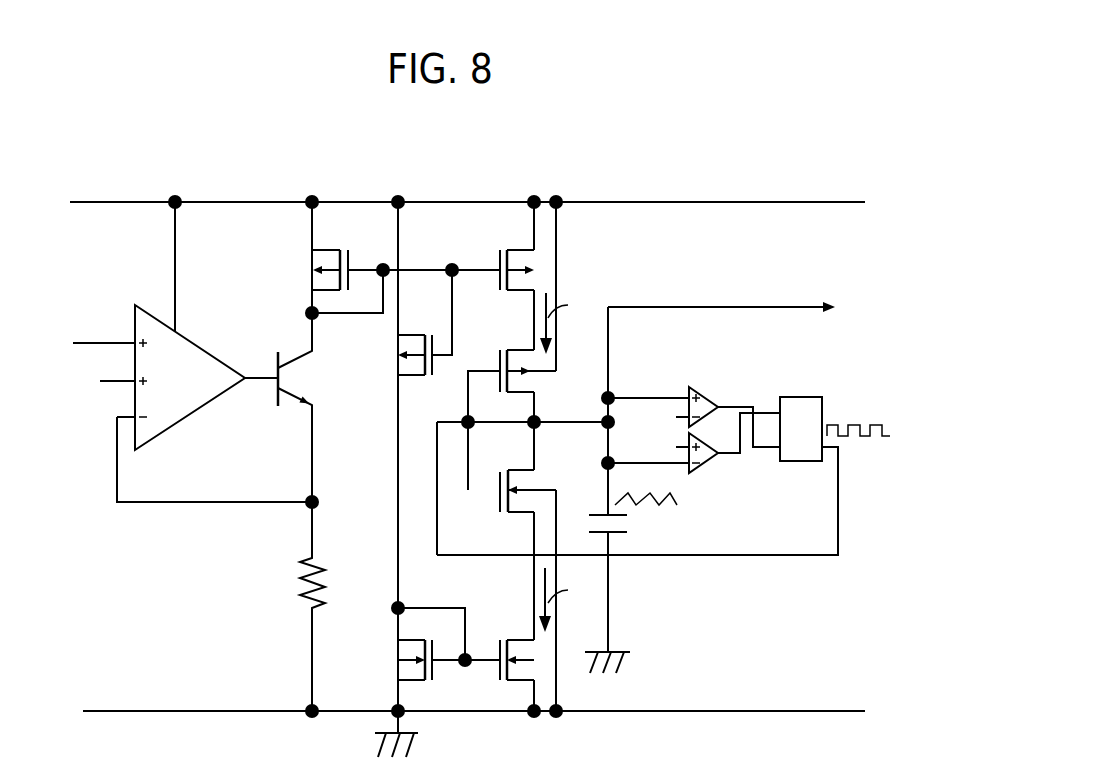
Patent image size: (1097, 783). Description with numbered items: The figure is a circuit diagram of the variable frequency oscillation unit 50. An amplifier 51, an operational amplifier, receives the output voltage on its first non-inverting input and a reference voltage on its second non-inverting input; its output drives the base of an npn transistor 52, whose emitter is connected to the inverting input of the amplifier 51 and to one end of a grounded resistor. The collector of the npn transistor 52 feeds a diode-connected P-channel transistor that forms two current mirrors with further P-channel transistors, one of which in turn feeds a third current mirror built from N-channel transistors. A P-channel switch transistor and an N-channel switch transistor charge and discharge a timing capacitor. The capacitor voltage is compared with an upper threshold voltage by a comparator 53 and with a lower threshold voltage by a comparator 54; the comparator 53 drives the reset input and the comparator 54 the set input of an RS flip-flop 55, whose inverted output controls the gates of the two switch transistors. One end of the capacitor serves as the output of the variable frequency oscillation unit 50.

The variable frequency oscillation unit 50 is at (643, 187).
The amplifier 51 is at (202, 345).
The npn transistor 52 is at (286, 354).
The comparator 53 is at (706, 387).
The comparator 54 is at (708, 470).
The RS flip-flop 55 is at (800, 397).